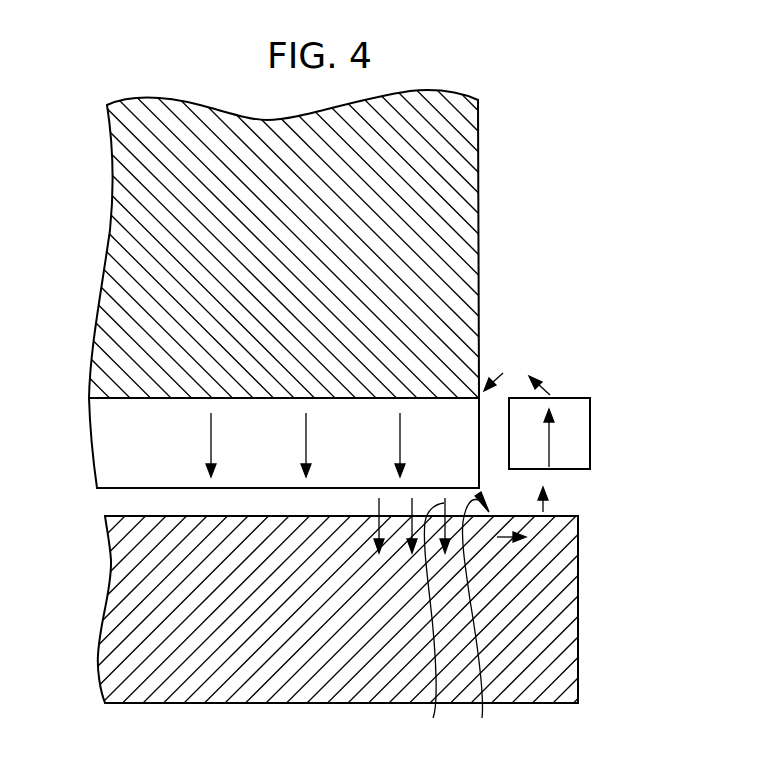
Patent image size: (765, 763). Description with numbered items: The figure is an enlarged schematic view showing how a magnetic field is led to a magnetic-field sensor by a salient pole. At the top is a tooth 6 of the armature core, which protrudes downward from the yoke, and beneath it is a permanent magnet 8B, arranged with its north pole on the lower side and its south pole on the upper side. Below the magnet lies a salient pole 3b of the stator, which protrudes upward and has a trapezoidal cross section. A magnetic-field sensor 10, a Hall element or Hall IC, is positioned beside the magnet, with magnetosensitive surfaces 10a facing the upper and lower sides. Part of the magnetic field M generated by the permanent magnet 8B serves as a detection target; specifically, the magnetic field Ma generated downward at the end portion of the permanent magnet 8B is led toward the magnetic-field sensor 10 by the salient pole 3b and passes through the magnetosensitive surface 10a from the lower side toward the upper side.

The tooth 6 is at (479, 207).
The permanent magnet 8B is at (108, 440).
The magnetic-field sensor 10 is at (578, 430).
The magnetosensitive surface 10a is at (578, 397).
The salient pole 3b is at (570, 631).
The magnetic field M is at (433, 626).
The magnetic field Ma is at (479, 620).